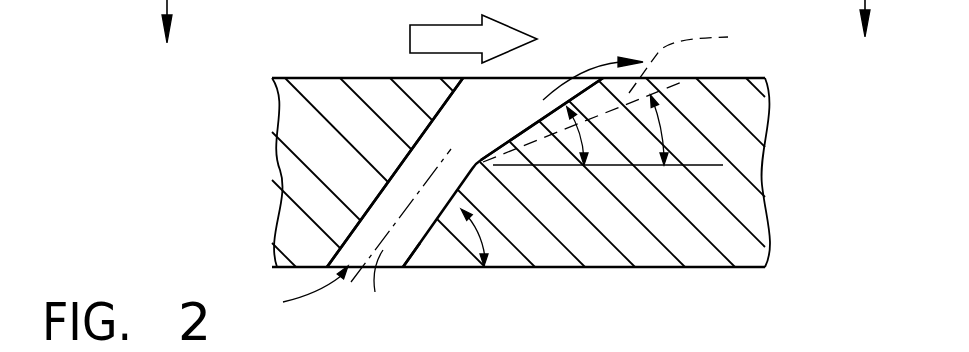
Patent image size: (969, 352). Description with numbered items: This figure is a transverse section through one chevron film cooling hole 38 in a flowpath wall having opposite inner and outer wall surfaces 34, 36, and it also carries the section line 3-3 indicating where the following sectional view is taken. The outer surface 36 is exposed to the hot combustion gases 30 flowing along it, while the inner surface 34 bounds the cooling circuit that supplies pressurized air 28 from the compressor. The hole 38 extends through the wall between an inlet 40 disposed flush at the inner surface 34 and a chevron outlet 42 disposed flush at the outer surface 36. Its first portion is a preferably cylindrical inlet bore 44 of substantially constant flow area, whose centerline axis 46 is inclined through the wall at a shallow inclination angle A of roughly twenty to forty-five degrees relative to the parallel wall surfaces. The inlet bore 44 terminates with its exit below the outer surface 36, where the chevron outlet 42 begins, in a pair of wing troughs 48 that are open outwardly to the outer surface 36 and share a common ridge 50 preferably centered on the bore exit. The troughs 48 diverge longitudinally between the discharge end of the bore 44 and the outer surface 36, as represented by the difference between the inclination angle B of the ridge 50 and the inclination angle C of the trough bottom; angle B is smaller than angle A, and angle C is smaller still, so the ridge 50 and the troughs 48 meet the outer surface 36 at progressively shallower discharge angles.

The section line 3- 3 is at (524, 47).
The pressurized air 28 is at (312, 300).
The hot combustion gases 30 is at (410, 32).
The inner wall surface 34 is at (651, 268).
The outer wall surface 36 is at (316, 78).
The film cooling hole 38 is at (410, 124).
The inlet 40 is at (402, 268).
The chevron outlet 42 is at (513, 77).
The inlet bore 44 is at (391, 172).
The centerline axis 46 is at (378, 301).
The wing troughs 48 is at (623, 92).
The ridge 50 is at (513, 140).
The inclination angle of inlet bore A is at (481, 223).
The inclination angle of ridge B is at (582, 136).
The inclination angle of trough bottom C is at (661, 117).